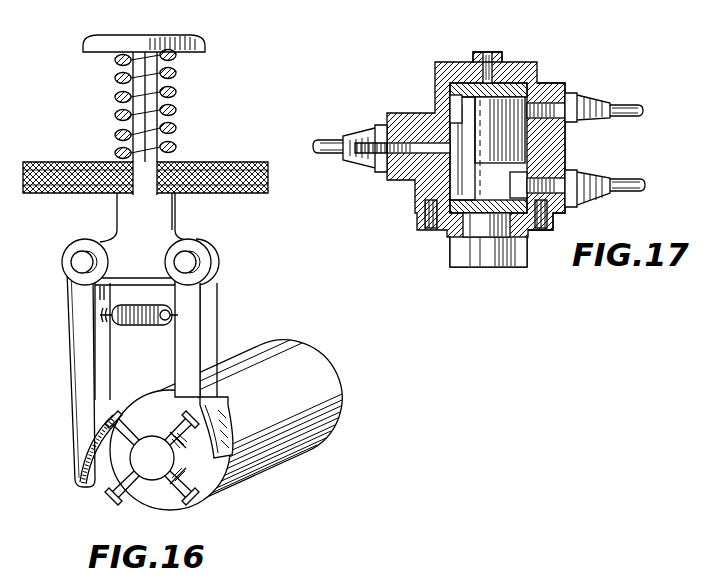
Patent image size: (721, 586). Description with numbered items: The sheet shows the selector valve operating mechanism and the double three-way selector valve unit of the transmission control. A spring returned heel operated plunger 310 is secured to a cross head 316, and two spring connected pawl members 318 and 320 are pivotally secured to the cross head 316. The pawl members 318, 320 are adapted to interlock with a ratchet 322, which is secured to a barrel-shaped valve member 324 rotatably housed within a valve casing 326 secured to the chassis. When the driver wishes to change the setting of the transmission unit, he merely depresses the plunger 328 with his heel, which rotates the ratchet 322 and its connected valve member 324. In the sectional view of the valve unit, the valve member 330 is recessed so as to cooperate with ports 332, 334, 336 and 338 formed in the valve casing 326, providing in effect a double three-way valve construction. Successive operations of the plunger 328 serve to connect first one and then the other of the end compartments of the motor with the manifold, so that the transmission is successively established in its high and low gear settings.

In FIG. 16, the spring returned heel operated plunger 310 is at (107, 160).
In FIG. 16, the plunger 328 is at (145, 82).
In FIG. 16, the cross head 316 is at (148, 217).
In FIG. 16, the pawl member 318 is at (83, 368).
In FIG. 16, the pawl member 320 is at (205, 334).
In FIG. 16, the ratchet 322 is at (118, 492).
In FIG. 16, the barrel-shaped valve member 324 is at (302, 360).
In FIG. 17, the barrel-shaped valve member 324 is at (428, 102).
In FIG. 17, the valve casing 326 is at (545, 144).
In FIG. 17, the valve member 330 is at (473, 174).
In FIG. 17, the port 332 is at (430, 146).
In FIG. 17, the port 334 is at (545, 100).
In FIG. 17, the port 336 is at (550, 171).
In FIG. 17, the port 338 is at (488, 62).